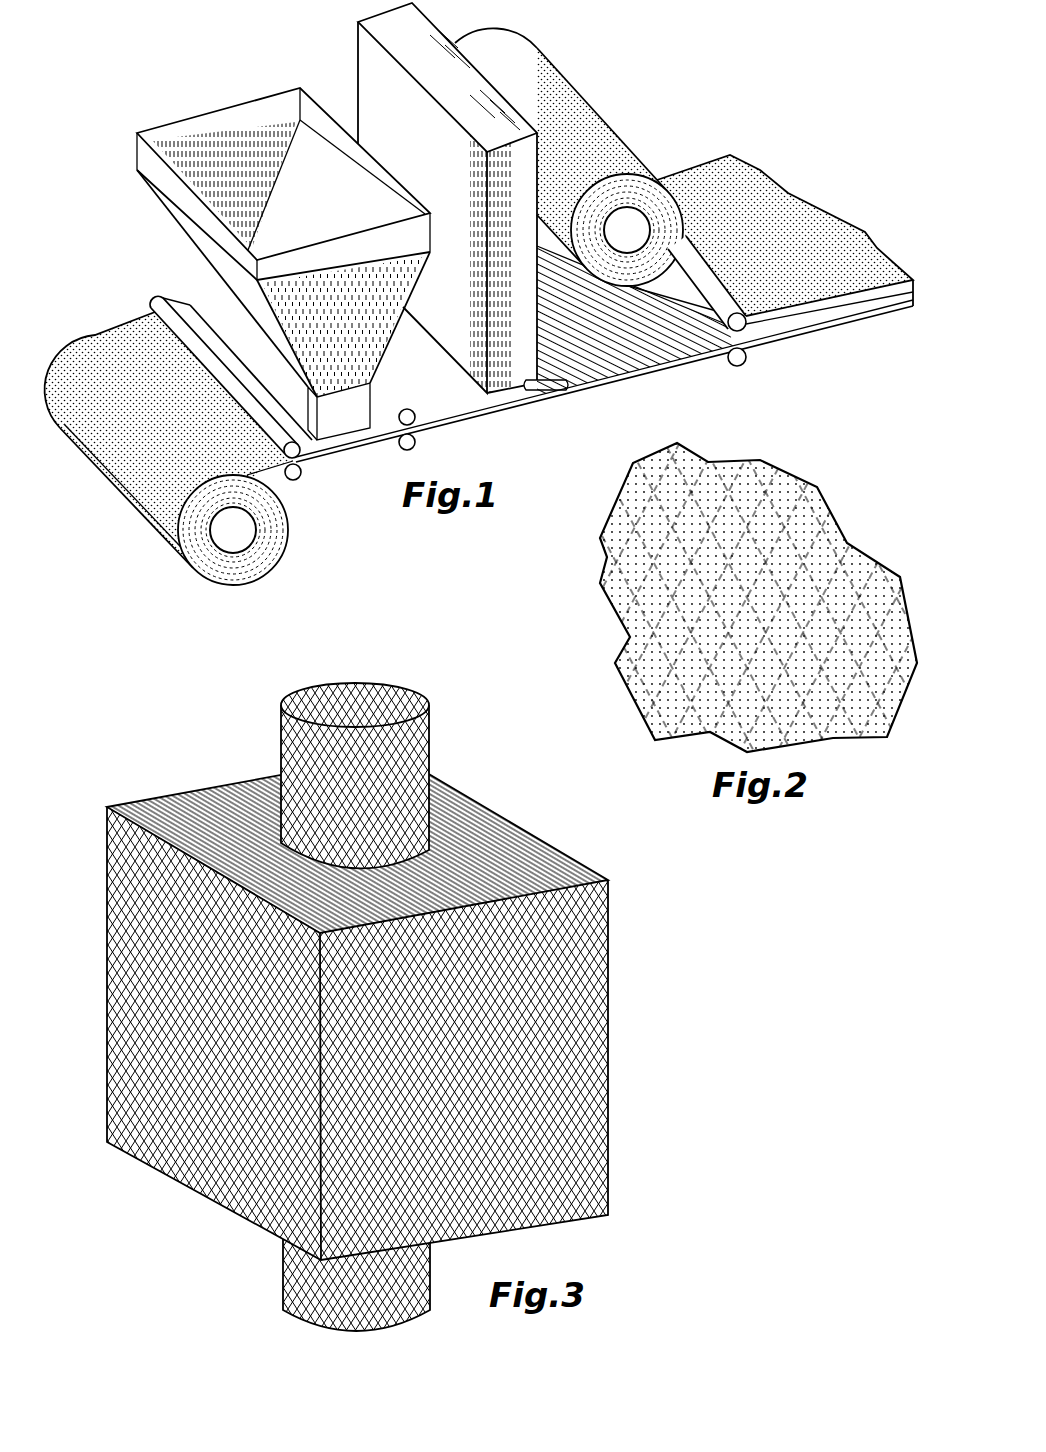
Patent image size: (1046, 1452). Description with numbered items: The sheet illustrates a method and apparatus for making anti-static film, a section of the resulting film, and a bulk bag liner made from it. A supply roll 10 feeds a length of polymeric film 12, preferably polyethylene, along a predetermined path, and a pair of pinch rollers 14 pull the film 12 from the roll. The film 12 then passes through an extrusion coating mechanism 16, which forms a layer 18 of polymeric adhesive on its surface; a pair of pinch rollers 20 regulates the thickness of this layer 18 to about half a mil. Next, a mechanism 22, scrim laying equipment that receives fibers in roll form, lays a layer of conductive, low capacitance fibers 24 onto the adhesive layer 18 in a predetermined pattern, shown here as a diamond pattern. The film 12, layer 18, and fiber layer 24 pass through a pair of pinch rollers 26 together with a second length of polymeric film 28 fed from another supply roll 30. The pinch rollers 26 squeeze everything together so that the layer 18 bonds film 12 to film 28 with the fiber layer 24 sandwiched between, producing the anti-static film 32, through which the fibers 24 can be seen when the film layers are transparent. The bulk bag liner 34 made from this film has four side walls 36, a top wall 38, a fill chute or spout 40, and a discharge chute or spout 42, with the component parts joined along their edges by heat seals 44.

In FIG. 1, the supply roll 10 is at (270, 547).
In FIG. 1, the polymeric film 12 is at (108, 385).
In FIG. 1, the pinch rollers 14 is at (157, 298).
In FIG. 1, the extrusion coating mechanism 16 is at (232, 98).
In FIG. 1, the layer 18 is at (452, 398).
In FIG. 1, the pinch rollers 20 is at (414, 416).
In FIG. 1, the mechanism 22 is at (372, 68).
In FIG. 1, the layer of conductive, low capacitance fibers 24 is at (618, 342).
In FIG. 2, the layer of conductive, low capacitance fibers 24 is at (718, 597).
In FIG. 1, the pinch rollers 26 is at (747, 363).
In FIG. 1, the polymeric film 28 is at (771, 198).
In FIG. 1, the supply roll 30 is at (562, 90).
In FIG. 1, the anti-static film 32 is at (805, 237).
In FIG. 2, the anti-static film 32 is at (633, 575).
In FIG. 3, the bulk bag liner 34 is at (371, 1007).
In FIG. 3, the side walls 36 is at (573, 1070).
In FIG. 3, the top wall 38 is at (522, 833).
In FIG. 3, the fill chute or spout 40 is at (290, 735).
In FIG. 3, the discharge chute or spout 42 is at (293, 1277).
In FIG. 3, the heat seals 44 is at (250, 773).